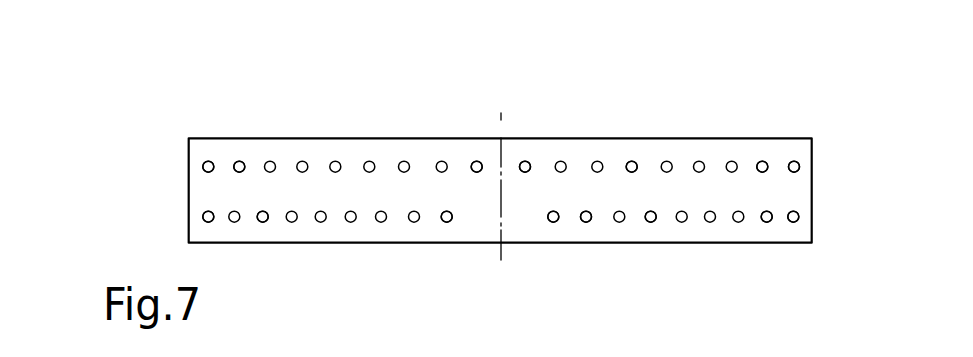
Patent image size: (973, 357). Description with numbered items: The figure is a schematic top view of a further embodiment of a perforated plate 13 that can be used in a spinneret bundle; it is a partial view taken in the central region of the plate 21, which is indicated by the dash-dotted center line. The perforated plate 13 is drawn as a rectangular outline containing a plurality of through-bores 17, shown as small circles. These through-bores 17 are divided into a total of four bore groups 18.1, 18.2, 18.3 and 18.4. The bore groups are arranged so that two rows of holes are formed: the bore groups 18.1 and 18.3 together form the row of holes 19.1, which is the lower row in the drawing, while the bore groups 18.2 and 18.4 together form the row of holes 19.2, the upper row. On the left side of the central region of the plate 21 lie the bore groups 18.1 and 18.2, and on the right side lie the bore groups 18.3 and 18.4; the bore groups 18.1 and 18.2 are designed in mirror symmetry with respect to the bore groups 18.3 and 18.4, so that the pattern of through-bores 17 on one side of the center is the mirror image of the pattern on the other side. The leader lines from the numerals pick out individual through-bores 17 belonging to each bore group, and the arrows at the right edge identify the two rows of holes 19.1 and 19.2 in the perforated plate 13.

The perforated plate 13 is at (805, 157).
The through-bores 17 is at (629, 172).
The bore group 18.1 is at (445, 222).
The bore group 18.2 is at (476, 161).
The bore group 18.3 is at (793, 222).
The bore group 18.4 is at (530, 163).
The row of holes 19.1 is at (843, 212).
The row of holes 19.2 is at (843, 163).
The central region of the plate 21 is at (500, 134).